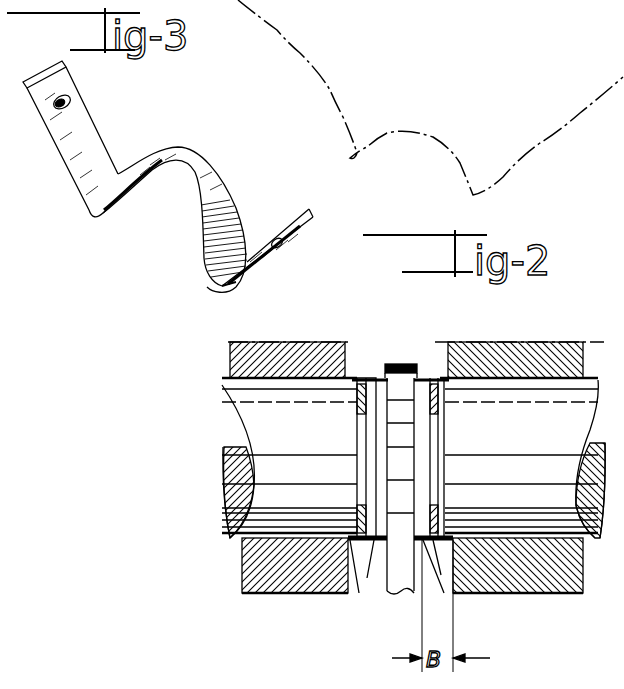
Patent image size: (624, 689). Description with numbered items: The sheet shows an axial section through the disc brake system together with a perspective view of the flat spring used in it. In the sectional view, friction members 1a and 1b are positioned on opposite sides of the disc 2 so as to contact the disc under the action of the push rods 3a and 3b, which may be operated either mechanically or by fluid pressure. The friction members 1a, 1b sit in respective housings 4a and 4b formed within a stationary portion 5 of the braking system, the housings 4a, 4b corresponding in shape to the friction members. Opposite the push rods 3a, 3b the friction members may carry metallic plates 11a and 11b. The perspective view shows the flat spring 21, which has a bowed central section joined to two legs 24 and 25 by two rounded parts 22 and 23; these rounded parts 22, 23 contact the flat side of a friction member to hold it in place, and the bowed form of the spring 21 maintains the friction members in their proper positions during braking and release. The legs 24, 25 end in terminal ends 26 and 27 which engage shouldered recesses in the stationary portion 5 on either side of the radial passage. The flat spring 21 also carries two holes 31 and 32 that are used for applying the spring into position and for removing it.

In FIG. 2, the friction member 1a is at (427, 372).
In FIG. 2, the friction member 1b is at (377, 372).
In FIG. 2, the disc 2 is at (396, 572).
In FIG. 2, the push rod 3a is at (523, 395).
In FIG. 2, the push rod 3b is at (300, 400).
In FIG. 2, the housing 4a is at (443, 593).
In FIG. 2, the housing 4b is at (358, 594).
In FIG. 2, the stationary portion 5 is at (560, 358).
In FIG. 2, the metallic plate 11a is at (462, 415).
In FIG. 2, the metallic plate 11b is at (358, 423).
In FIG. 3, the flat spring 21 is at (190, 160).
In FIG. 3, the rounded part 22 is at (93, 217).
In FIG. 3, the rounded part 23 is at (207, 287).
In FIG. 3, the leg 24 is at (52, 150).
In FIG. 3, the leg 25 is at (253, 273).
In FIG. 3, the terminal end 26 is at (43, 73).
In FIG. 3, the terminal end 27 is at (293, 210).
In FIG. 3, the hole 31 is at (282, 243).
In FIG. 3, the hole 32 is at (72, 97).